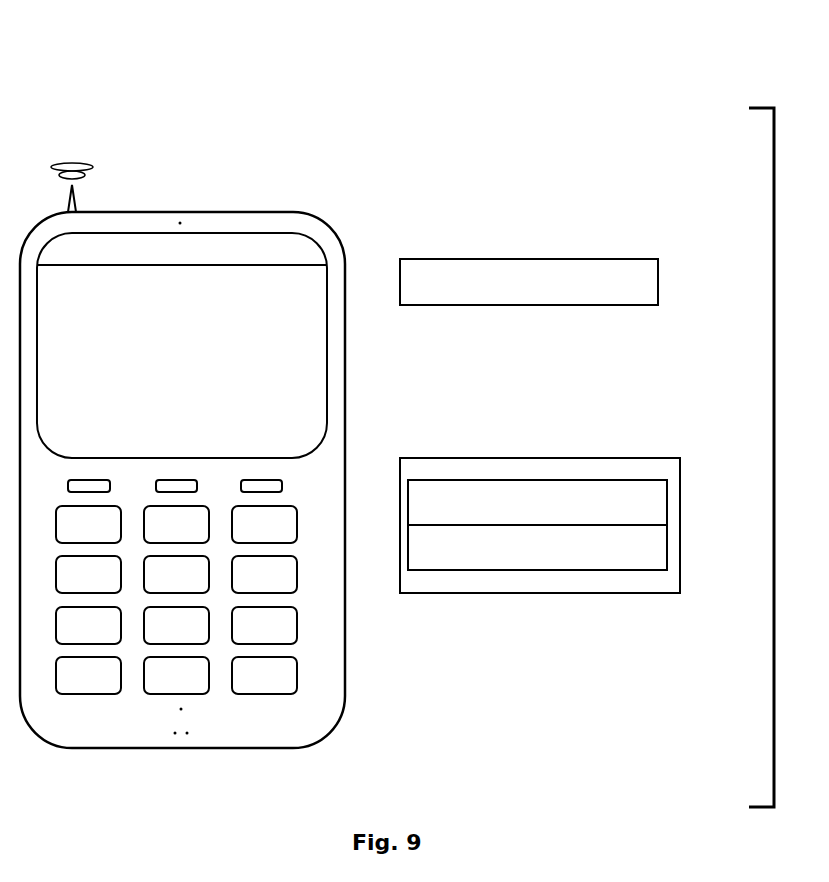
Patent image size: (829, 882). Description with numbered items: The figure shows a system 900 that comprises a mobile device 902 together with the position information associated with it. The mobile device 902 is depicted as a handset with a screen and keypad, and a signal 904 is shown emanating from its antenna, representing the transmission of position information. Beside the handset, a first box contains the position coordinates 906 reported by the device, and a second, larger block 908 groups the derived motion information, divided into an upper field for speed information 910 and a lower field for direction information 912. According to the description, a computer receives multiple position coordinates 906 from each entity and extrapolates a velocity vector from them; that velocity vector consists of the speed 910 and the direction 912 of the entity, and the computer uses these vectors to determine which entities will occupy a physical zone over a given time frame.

The system 900 is at (383, 98).
The mobile device 902 is at (180, 210).
The signal 904 is at (72, 165).
The position coordinates 906 is at (525, 259).
The speed and direction information block 908 is at (534, 458).
The speed information 910 is at (667, 507).
The direction information 912 is at (667, 550).